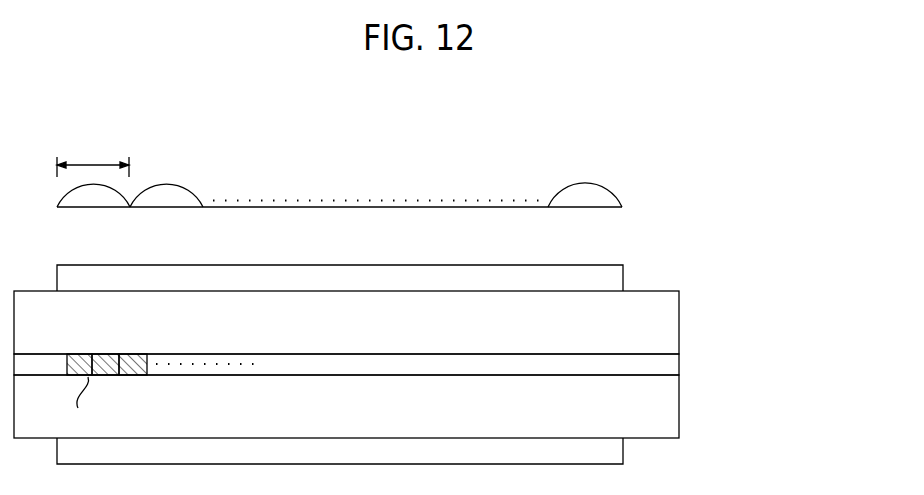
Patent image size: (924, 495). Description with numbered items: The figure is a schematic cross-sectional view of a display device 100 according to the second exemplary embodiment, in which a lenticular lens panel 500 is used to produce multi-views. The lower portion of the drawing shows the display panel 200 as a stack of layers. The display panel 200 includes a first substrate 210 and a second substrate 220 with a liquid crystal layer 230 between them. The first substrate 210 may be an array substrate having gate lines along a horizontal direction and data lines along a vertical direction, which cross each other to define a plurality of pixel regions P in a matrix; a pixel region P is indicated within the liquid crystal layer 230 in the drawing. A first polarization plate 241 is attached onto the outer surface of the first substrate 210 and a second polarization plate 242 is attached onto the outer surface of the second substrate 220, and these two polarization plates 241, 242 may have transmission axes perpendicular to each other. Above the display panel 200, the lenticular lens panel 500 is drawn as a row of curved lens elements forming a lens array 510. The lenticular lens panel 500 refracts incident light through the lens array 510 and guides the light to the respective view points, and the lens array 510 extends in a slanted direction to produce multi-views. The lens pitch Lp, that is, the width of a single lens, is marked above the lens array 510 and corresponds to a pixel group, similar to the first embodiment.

The display device 100 is at (368, 92).
The lenticular lens panel 500 is at (658, 198).
The lens array 510 is at (608, 197).
The display panel 200 is at (833, 265).
The second polarization plate 242 is at (617, 273).
The second substrate 220 is at (673, 318).
The liquid crystal layer 230 is at (645, 363).
The first substrate 210 is at (645, 415).
The first polarization plate 241 is at (617, 455).